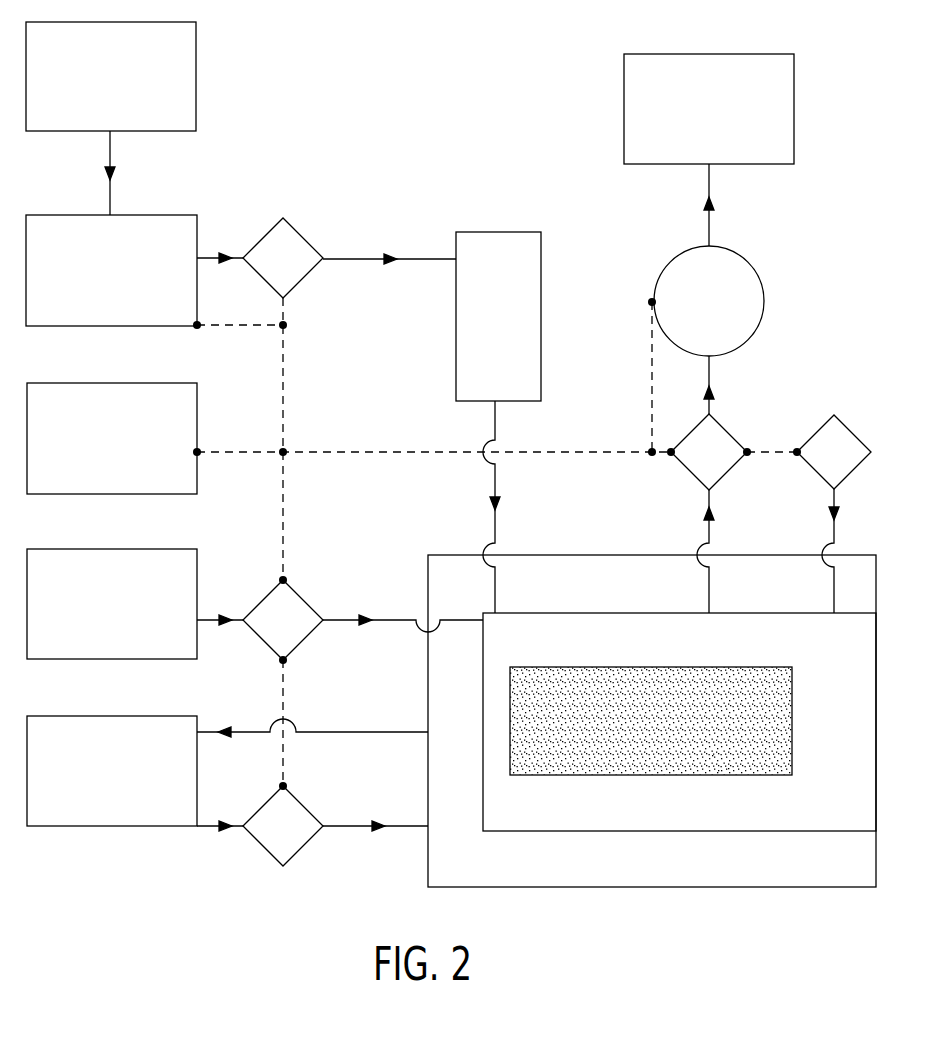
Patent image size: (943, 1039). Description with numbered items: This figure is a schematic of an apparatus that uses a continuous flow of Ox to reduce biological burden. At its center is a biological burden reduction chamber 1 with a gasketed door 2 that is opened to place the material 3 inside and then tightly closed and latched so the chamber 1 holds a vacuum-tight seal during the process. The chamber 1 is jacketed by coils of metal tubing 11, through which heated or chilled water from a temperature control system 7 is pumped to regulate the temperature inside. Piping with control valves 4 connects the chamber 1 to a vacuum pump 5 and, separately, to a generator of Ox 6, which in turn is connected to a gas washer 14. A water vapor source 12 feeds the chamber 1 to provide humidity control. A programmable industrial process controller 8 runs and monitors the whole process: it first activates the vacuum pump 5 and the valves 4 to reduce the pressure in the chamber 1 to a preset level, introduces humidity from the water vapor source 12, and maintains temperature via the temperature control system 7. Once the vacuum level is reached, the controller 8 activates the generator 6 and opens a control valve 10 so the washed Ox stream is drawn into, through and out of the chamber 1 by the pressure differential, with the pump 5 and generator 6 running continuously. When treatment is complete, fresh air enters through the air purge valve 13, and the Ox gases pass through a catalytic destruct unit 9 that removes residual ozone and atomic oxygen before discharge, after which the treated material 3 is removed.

The biological burden reduction chamber 1 is at (730, 823).
The gasketed door 2 is at (628, 755).
The material 3 is at (722, 763).
The control valves 4 is at (495, 529).
The vacuum pump 5 is at (757, 308).
The generator of Ox 6 is at (177, 223).
The temperature control system 7 is at (82, 815).
The programmable industrial process controller 8 is at (83, 477).
The catalytic destruct unit 9 is at (633, 117).
The control valve 10 is at (300, 237).
The coils of metal tubing 11 is at (427, 798).
The water vapor source 12 is at (48, 643).
The air purge valve 13 is at (850, 437).
The gas washer 14 is at (533, 287).